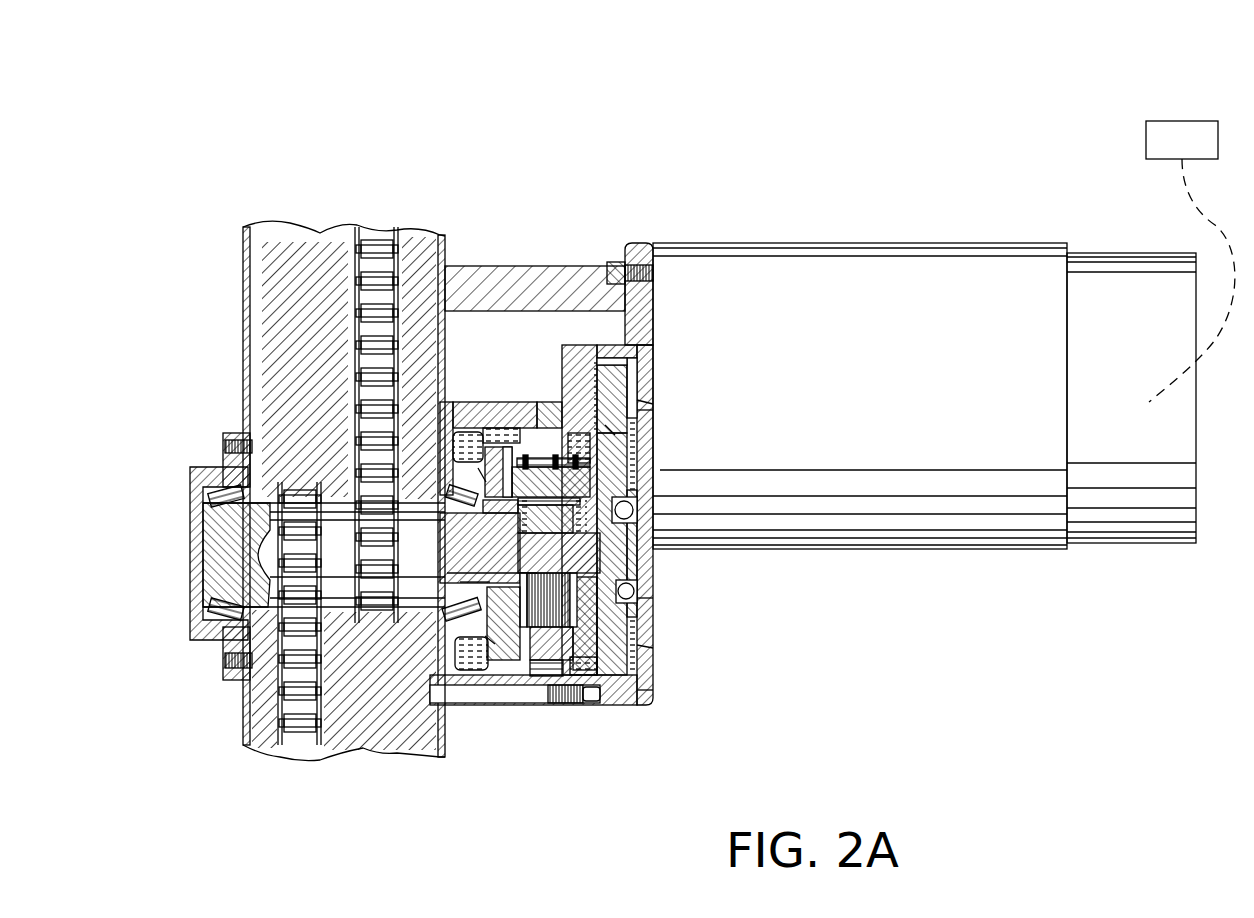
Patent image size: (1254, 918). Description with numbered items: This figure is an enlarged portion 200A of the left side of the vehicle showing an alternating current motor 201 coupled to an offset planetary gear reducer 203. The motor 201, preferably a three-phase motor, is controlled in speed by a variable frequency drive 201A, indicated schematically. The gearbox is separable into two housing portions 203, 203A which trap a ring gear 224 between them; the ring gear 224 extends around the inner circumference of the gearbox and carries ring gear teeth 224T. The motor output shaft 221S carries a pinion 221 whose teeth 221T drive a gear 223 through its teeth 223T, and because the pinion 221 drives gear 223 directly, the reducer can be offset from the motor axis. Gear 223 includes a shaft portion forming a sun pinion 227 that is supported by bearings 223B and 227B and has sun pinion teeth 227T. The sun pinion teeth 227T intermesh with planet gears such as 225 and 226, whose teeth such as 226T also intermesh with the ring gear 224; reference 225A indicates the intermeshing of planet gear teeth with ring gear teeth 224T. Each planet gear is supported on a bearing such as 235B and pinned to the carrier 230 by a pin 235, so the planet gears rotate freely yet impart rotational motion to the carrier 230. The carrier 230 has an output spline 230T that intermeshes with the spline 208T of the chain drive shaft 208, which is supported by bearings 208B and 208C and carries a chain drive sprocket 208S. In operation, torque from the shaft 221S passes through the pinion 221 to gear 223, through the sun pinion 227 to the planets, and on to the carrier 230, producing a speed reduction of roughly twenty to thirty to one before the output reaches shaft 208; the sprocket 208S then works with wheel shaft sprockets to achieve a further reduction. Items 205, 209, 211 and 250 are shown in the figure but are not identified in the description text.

The enlarged portion 200A is at (905, 105).
The alternating current motor 201 is at (1028, 244).
The variable frequency drive 201A is at (1182, 121).
The planetary gear reducer 203 is at (648, 710).
The housing portion 203A is at (488, 470).
The side plate 205 is at (242, 257).
The chain drive shaft 208 is at (232, 567).
The bearing 208B is at (455, 600).
The bearing 208C is at (192, 468).
The chain drive sprocket 208S is at (228, 441).
The spline 208T is at (480, 480).
The first chain 209 is at (372, 242).
The second chain 211 is at (293, 672).
The pinion gear 221 is at (653, 383).
The output shaft 221S is at (655, 405).
The pinion teeth 221T is at (610, 430).
The gear 223 is at (648, 662).
The bearing 223B is at (648, 598).
The gear teeth 223T is at (648, 690).
The ring gear 224 is at (553, 690).
The ring gear teeth 224T is at (590, 690).
The planet gear 225 is at (525, 440).
The intermeshing 225A is at (548, 445).
The planet gear 226 is at (648, 622).
The planet gear teeth 226T is at (648, 648).
The sun pinion 227 is at (645, 568).
The bearing 227B is at (468, 582).
The sun pinion teeth 227T is at (535, 680).
The carrier 230 is at (515, 650).
The output spline 230T is at (490, 640).
The pin 235 is at (470, 420).
The bearing 235B is at (655, 410).
The clutch assembly 250 is at (578, 470).